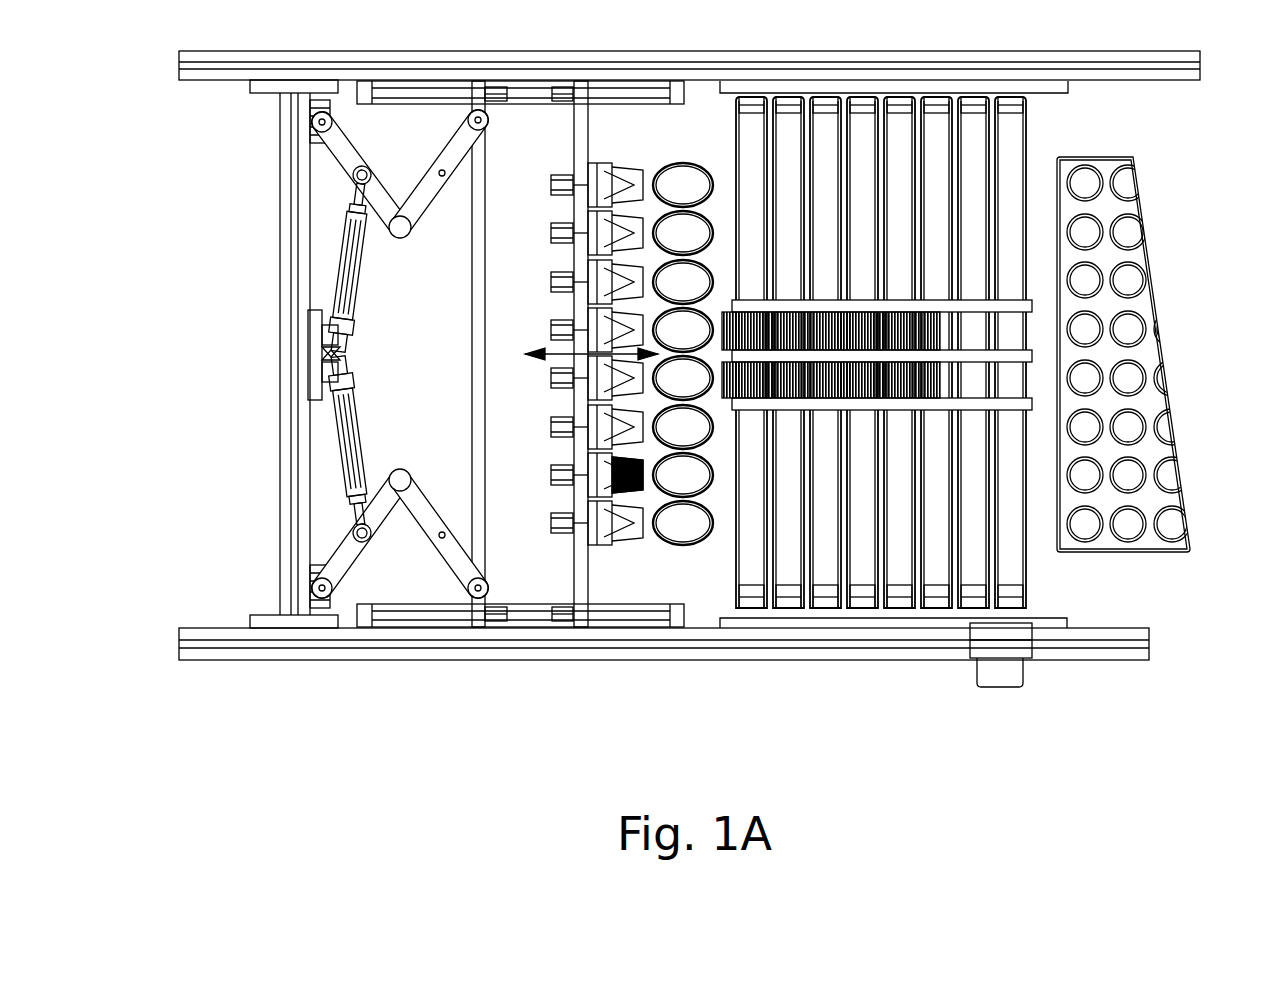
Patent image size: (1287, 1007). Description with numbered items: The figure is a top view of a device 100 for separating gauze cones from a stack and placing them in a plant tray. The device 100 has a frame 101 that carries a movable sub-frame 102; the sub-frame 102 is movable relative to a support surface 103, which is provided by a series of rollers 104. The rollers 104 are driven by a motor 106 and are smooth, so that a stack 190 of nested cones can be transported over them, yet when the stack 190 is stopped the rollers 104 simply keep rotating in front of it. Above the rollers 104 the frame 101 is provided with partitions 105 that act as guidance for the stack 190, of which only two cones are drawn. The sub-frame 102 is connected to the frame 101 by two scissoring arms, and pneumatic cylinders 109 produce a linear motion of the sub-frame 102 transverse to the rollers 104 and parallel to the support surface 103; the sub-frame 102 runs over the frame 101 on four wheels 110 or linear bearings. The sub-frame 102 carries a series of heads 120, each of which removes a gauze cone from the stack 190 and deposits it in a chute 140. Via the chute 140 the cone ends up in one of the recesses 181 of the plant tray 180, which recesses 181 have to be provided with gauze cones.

The device 100 is at (337, 723).
The frame 101 is at (237, 654).
The movable sub-frame 102 is at (578, 585).
The support surface 103 is at (827, 567).
The rollers 104 is at (780, 558).
The partitions 105 is at (930, 400).
The motor 106 is at (1006, 685).
The pneumatic cylinders 109 is at (330, 462).
The wheels 110 is at (495, 614).
The heads 120 is at (627, 538).
The chute 140 is at (685, 480).
The plant tray 180 is at (1105, 258).
The recesses 181 is at (1125, 380).
The stack 190 is at (923, 372).